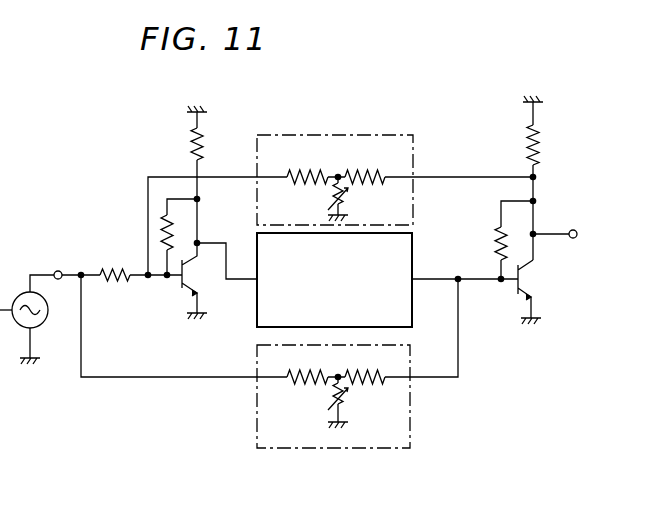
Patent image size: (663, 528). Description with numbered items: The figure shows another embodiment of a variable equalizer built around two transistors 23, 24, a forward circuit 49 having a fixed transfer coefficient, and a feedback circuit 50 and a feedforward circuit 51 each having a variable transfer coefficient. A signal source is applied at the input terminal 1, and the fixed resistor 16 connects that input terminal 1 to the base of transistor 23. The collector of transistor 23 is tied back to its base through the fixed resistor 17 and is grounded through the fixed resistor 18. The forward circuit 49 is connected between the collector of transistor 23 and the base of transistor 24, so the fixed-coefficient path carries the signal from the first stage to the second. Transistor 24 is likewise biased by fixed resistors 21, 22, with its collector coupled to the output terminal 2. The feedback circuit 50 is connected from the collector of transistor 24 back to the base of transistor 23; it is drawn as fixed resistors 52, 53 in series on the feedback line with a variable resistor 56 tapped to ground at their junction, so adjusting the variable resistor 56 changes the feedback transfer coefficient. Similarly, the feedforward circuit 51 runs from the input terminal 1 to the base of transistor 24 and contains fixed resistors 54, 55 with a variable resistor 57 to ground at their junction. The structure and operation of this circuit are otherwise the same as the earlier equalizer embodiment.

The input terminal 1 is at (60, 272).
The output terminal 2 is at (577, 229).
The fixed resistor 16 is at (110, 286).
The fixed resistor 17 is at (158, 227).
The fixed resistor 18 is at (190, 144).
The fixed resistor 21 is at (496, 233).
The fixed resistor 22 is at (540, 140).
The transistor 23 is at (186, 291).
The transistor 24 is at (530, 277).
The forward circuit 49 is at (254, 289).
The feedback circuit 50 is at (318, 135).
The feedforward circuit 51 is at (290, 448).
The fixed resistor 52 is at (300, 168).
The fixed resistor 53 is at (378, 168).
The fixed resistor 54 is at (290, 384).
The fixed resistor 55 is at (385, 383).
The variable resistor 56 is at (348, 205).
The variable resistor 57 is at (344, 402).